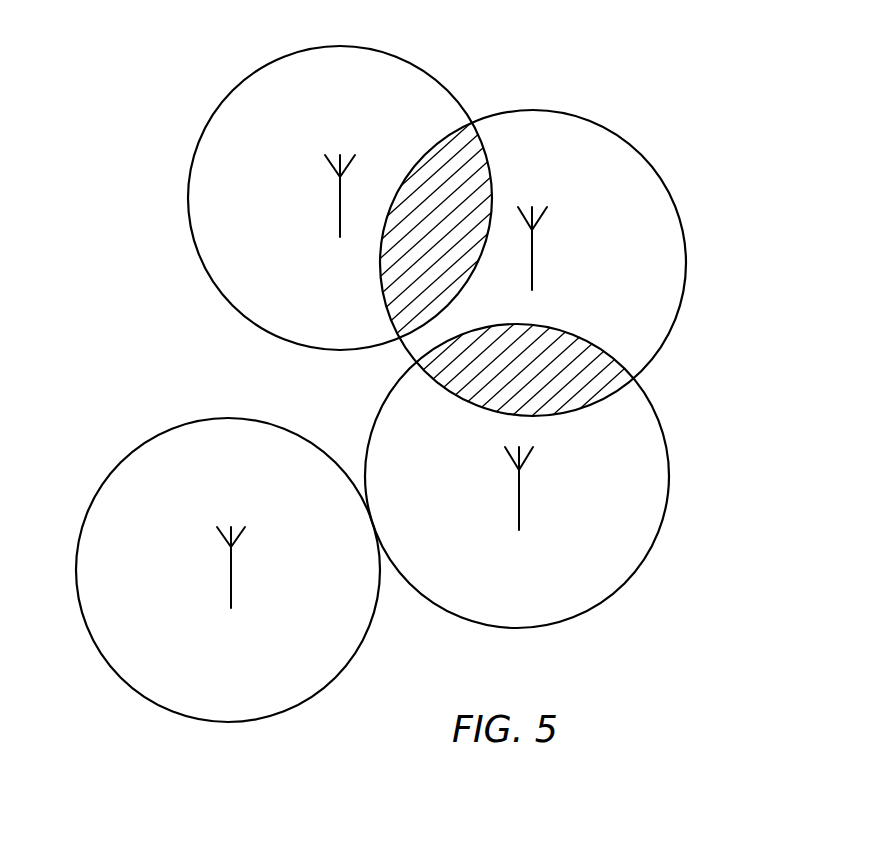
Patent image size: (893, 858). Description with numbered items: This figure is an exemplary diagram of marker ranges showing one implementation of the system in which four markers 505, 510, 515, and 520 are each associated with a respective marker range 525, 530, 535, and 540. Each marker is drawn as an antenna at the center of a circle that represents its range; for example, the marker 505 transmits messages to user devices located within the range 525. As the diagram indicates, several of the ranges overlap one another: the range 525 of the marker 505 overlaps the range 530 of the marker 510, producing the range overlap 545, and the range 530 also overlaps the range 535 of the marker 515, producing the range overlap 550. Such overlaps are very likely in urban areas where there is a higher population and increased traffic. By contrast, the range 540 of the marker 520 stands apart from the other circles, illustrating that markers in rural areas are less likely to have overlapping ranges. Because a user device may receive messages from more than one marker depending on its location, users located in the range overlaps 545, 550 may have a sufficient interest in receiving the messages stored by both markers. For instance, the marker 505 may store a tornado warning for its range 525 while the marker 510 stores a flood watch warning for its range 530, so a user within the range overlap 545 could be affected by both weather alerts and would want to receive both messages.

The marker 505 is at (337, 210).
The marker 510 is at (533, 263).
The marker 515 is at (520, 503).
The marker 520 is at (232, 583).
The marker range 525 is at (213, 110).
The marker range 530 is at (652, 165).
The marker range 535 is at (655, 542).
The marker range 540 is at (102, 483).
The range overlap 545 is at (455, 177).
The range overlap 550 is at (543, 382).